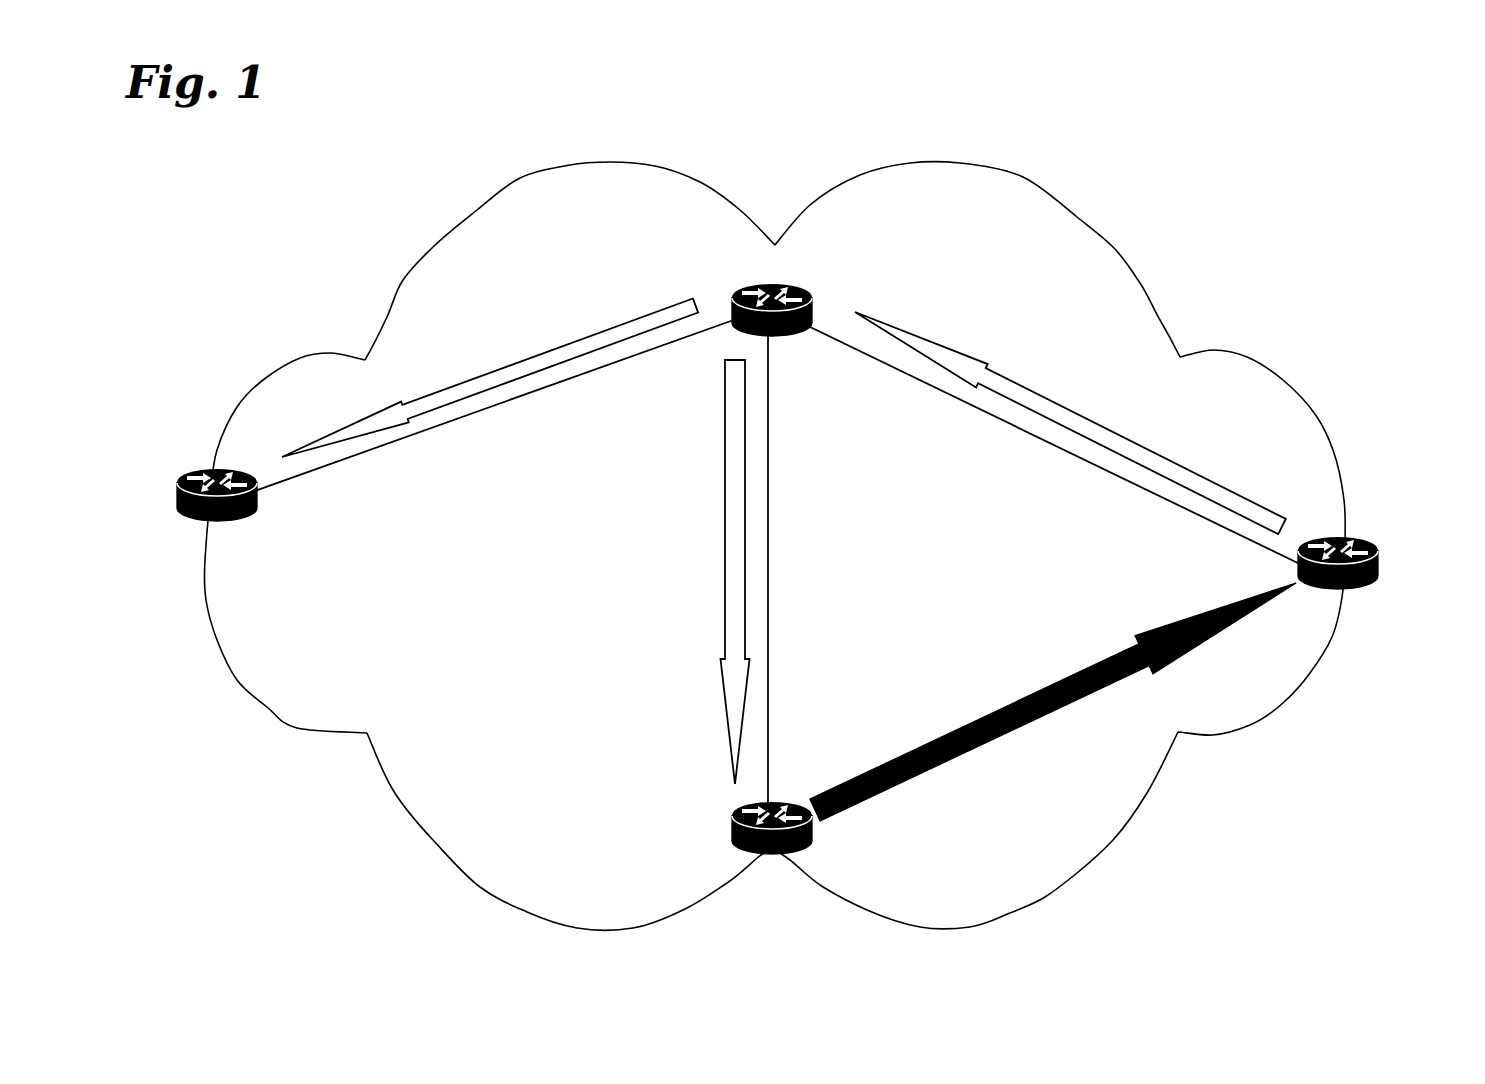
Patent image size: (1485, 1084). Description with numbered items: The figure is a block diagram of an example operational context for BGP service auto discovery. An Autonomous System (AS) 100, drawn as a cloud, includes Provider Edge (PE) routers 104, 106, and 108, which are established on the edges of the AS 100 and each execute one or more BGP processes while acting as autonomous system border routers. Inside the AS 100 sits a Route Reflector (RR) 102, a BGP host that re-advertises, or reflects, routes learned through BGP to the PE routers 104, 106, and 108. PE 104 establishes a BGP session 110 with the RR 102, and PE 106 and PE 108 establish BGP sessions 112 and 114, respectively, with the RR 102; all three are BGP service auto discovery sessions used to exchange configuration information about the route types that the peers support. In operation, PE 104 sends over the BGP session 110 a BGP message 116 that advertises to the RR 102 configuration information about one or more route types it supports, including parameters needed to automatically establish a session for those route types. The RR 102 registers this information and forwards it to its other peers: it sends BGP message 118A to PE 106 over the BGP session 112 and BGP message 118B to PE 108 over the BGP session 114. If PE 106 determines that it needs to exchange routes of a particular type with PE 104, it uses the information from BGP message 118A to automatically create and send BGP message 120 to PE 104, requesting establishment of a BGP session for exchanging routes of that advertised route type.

The Autonomous System (AS) 100 is at (774, 546).
The Route Reflector (RR) 102 is at (850, 270).
The Provider Edge (PE) router 104 is at (1380, 562).
The Provider Edge (PE) router 106 is at (775, 858).
The Provider Edge (PE) router 108 is at (180, 492).
The BGP session 110 is at (1040, 440).
The BGP session 112 is at (768, 512).
The BGP session 114 is at (510, 400).
The BGP message 116 is at (1090, 430).
The BGP message 118A is at (739, 573).
The BGP message 118B is at (549, 360).
The BGP message 120 is at (962, 728).